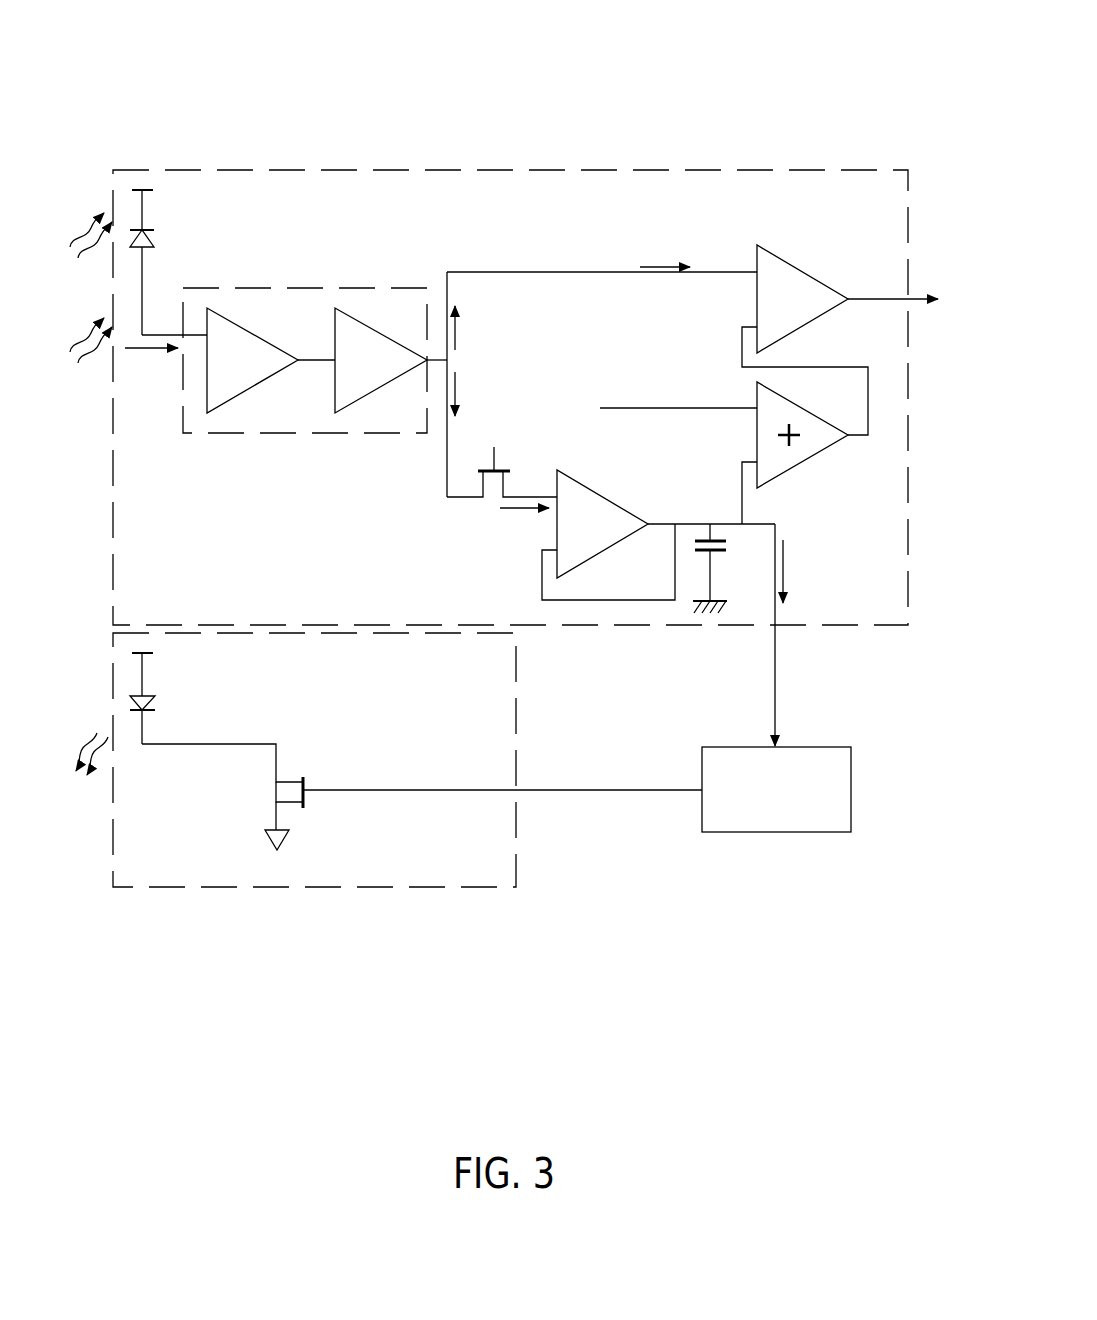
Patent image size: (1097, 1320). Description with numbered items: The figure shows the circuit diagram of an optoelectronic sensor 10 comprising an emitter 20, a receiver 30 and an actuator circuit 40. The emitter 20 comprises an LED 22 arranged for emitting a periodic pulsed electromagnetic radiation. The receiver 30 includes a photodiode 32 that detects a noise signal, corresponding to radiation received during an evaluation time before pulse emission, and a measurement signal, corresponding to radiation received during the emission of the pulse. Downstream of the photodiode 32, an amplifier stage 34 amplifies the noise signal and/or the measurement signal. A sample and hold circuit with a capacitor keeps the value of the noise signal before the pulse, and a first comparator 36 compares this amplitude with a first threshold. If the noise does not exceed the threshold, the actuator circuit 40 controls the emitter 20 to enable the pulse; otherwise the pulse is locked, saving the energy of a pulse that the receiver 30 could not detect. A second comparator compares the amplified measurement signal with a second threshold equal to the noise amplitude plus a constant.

The optoelectronic sensor 10 is at (682, 51).
The emitter 20 is at (524, 732).
The LED 22 is at (155, 700).
The receiver 30 is at (378, 161).
The photodiode 32 is at (154, 247).
The amplifier stage 34 is at (331, 288).
The first comparator 36 is at (805, 462).
The actuator circuit 40 is at (814, 744).